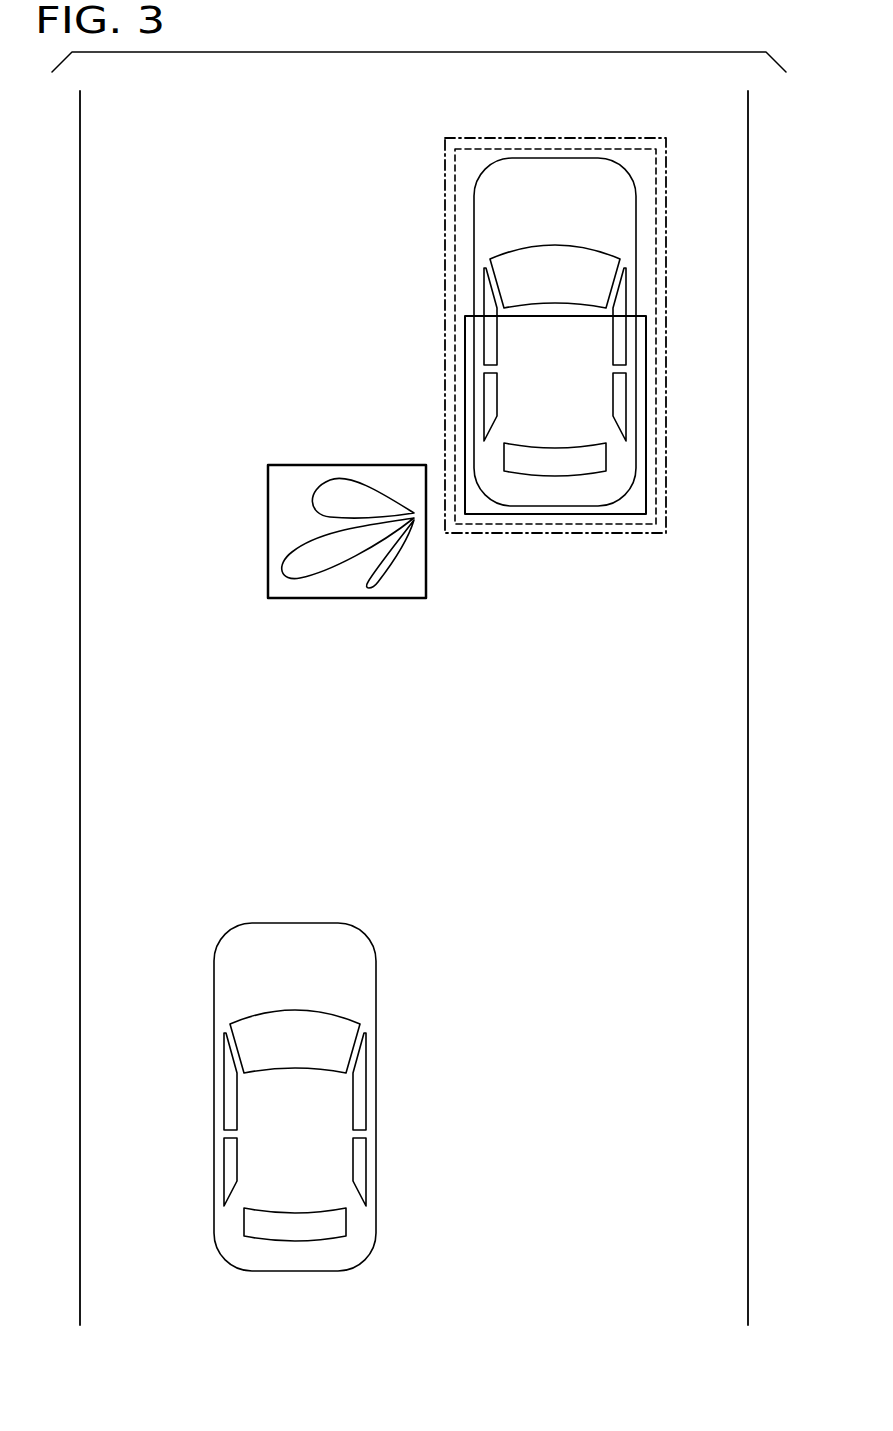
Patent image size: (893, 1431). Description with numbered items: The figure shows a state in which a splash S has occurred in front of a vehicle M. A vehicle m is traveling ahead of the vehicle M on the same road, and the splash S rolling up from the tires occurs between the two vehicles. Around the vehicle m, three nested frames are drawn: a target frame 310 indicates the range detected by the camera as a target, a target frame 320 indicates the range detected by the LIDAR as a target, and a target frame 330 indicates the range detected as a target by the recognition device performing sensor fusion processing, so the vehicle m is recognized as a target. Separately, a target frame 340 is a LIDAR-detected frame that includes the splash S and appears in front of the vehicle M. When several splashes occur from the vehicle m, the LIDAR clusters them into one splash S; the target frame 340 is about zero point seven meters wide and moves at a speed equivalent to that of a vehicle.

The vehicle m is at (474, 226).
The vehicle M is at (294, 923).
The target frame 310 is at (465, 363).
The target frame 320 is at (510, 525).
The target frame 330 is at (608, 533).
The target frame 340 is at (268, 530).
The splash S is at (332, 478).